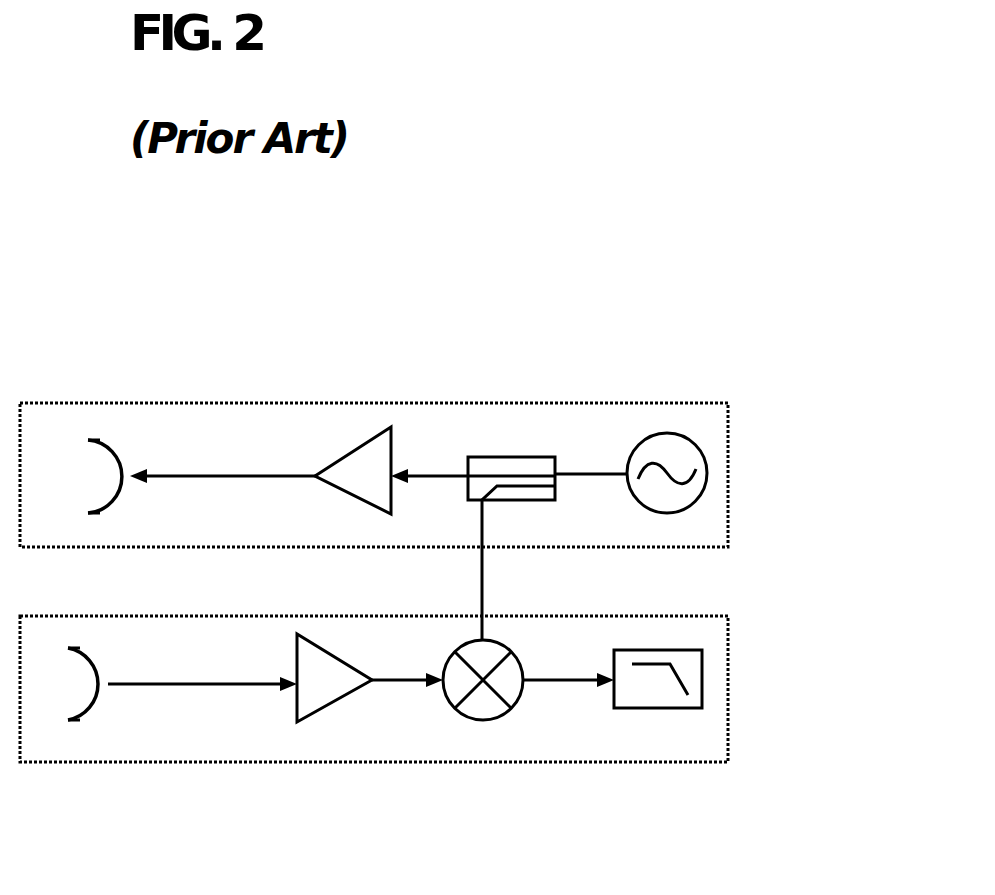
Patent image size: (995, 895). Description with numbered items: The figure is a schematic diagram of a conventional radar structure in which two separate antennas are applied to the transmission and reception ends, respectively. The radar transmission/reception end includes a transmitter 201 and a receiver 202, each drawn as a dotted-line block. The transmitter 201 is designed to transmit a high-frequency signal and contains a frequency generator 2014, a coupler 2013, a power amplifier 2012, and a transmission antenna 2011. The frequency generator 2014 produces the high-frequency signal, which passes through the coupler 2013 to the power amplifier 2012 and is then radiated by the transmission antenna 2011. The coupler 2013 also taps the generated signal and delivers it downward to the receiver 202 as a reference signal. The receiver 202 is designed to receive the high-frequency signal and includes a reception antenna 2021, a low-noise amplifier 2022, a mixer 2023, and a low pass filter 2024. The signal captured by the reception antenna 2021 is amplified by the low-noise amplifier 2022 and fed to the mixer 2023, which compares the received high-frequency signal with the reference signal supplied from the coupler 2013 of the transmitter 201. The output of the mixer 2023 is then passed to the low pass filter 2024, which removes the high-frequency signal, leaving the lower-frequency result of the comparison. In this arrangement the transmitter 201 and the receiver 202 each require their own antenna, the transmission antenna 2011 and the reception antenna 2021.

The transmitter 201 is at (708, 403).
The transmission antenna 2011 is at (117, 440).
The power amplifier 2012 is at (365, 440).
The coupler 2013 is at (500, 457).
The frequency generator 2014 is at (650, 433).
The receiver 202 is at (648, 762).
The reception antenna 2021 is at (95, 712).
The low-noise amplifier 2022 is at (325, 705).
The mixer 2023 is at (478, 719).
The low pass filter (LPF) 2024 is at (688, 670).